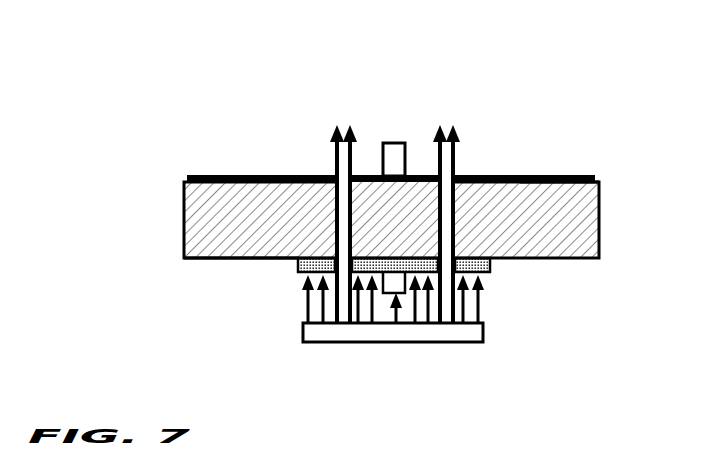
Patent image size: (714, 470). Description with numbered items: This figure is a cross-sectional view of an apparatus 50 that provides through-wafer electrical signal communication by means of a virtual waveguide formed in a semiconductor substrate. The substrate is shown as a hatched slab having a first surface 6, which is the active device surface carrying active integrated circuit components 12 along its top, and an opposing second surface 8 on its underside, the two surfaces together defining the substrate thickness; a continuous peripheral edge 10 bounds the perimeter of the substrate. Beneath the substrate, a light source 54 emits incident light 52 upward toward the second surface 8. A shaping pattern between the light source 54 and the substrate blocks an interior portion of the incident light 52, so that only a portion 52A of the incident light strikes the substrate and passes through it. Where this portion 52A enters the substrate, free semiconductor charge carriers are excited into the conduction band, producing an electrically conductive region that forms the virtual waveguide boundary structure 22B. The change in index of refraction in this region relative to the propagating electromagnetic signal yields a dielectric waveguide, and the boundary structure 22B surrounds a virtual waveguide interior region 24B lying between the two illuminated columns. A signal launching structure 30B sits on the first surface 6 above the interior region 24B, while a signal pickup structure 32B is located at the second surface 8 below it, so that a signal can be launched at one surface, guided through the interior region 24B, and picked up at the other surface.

The apparatus 50 is at (158, 77).
The continuous peripheral edge 10 is at (599, 226).
The active integrated circuit components 12 is at (226, 176).
The first surface 6 is at (599, 182).
The second surface 8 is at (191, 258).
The virtual waveguide boundary structure 22B is at (340, 213).
The virtual waveguide interior region 24B is at (415, 190).
The signal launching structure 30B is at (393, 143).
The signal pickup structure 32B is at (399, 295).
The incident light 52 is at (505, 310).
The portion of the incident light 52A is at (314, 151).
The light source 54 is at (317, 343).